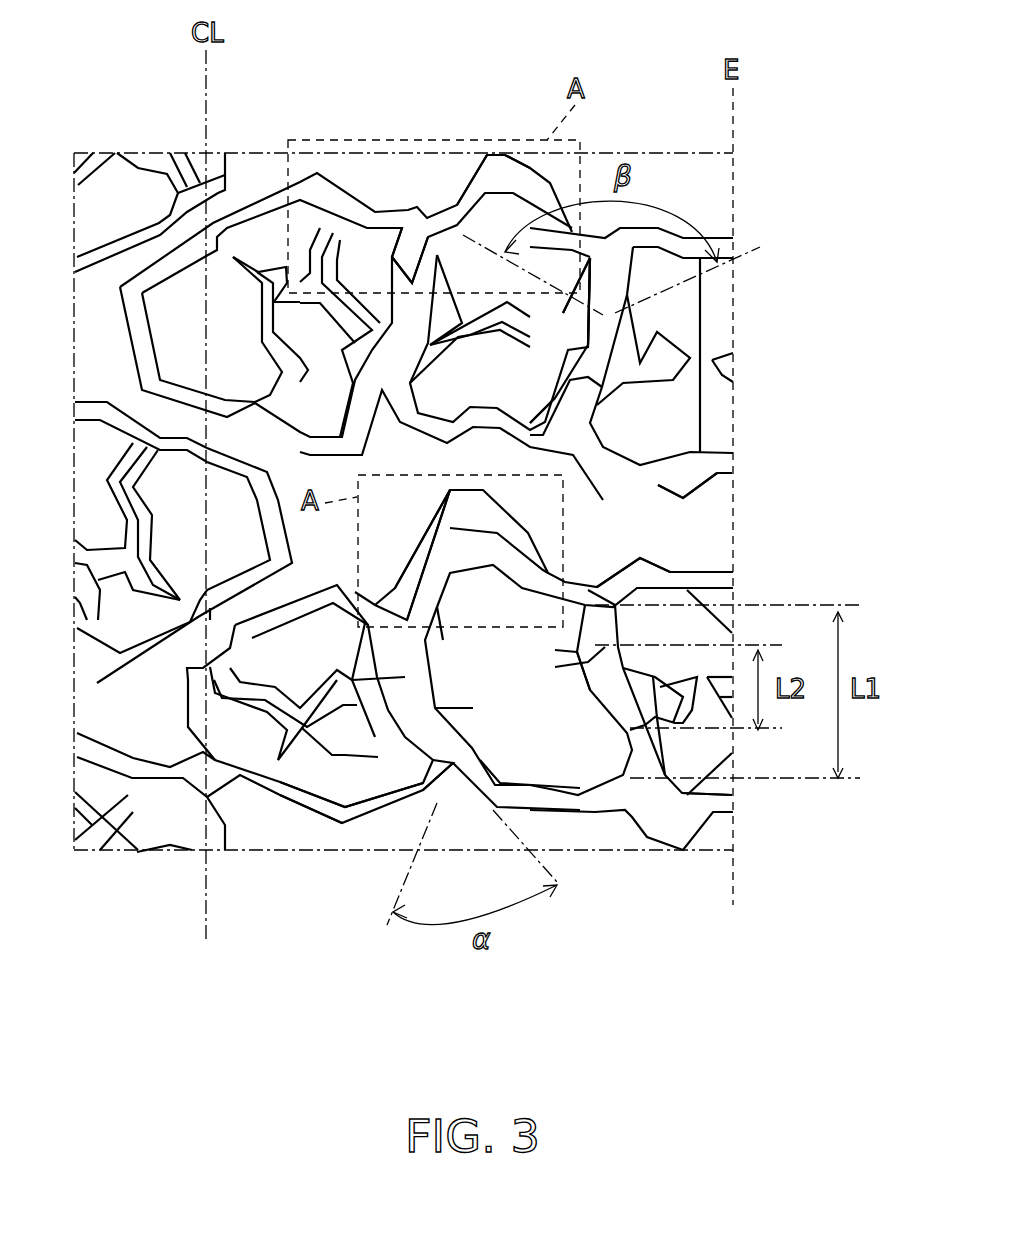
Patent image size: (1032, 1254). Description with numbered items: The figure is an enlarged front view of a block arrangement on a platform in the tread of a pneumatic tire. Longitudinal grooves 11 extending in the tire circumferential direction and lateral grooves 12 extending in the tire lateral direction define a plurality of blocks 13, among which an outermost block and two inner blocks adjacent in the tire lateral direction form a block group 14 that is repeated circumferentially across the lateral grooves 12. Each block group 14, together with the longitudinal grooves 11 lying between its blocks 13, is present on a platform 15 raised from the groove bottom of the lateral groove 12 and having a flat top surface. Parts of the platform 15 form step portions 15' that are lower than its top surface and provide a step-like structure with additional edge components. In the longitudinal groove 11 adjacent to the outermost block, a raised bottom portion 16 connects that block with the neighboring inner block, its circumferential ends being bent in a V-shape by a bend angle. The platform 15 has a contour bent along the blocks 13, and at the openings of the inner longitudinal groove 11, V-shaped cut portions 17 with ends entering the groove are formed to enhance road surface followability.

The longitudinal groove 11 is at (578, 403).
The lateral groove 12 is at (612, 542).
The block 13 is at (348, 782).
The block group 14 is at (845, 997).
The platform 15 is at (738, 489).
The step portion 15' is at (420, 348).
The raised bottom portion 16 is at (602, 343).
The cut portion 17 is at (413, 262).